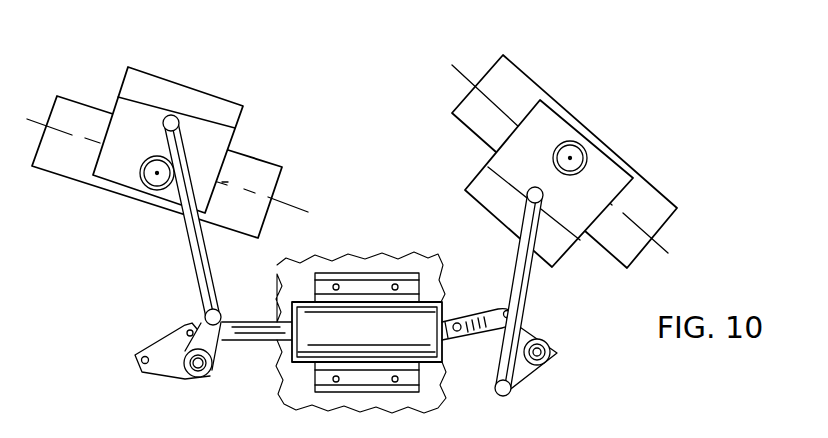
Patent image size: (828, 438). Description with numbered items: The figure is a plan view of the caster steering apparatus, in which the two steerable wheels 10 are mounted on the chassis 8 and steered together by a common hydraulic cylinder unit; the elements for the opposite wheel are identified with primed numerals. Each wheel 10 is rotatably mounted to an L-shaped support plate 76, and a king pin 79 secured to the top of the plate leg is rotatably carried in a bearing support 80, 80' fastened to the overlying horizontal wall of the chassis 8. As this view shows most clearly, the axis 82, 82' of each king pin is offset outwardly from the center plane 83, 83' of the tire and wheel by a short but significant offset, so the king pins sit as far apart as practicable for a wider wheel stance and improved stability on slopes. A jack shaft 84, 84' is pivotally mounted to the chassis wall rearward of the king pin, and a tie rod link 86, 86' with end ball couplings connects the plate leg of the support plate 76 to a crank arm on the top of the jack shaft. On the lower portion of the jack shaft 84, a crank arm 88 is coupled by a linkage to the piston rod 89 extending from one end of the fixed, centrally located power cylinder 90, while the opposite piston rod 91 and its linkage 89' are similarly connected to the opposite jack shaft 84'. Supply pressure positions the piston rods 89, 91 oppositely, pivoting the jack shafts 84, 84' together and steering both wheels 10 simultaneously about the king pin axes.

The chassis 8 is at (323, 267).
The wheel 10 is at (253, 218).
The L-shaped support plate 76 is at (118, 80).
The king pin 79 is at (157, 190).
The bearing support 80 is at (107, 198).
The bearing support 80' is at (609, 150).
The axis of the king pin 82 is at (142, 153).
The axis of the king pin 82' is at (593, 124).
The center plane of the tire and wheel 83 is at (254, 143).
The center plane of the tire and wheel 83' is at (529, 183).
The jack shaft 84 is at (220, 365).
The jack shaft 84' is at (559, 356).
The tie rod link 86 is at (209, 220).
The tie rod link 86' is at (494, 291).
The crank arm 88 is at (163, 366).
The piston rod 89 is at (256, 313).
The piston rod linkage 89' is at (477, 362).
The cylinder 90 is at (353, 328).
The piston rod 91 is at (442, 332).